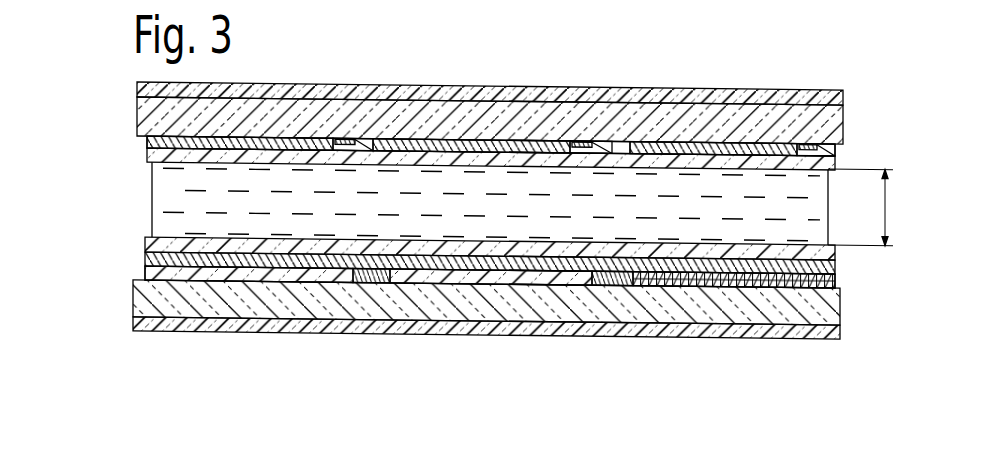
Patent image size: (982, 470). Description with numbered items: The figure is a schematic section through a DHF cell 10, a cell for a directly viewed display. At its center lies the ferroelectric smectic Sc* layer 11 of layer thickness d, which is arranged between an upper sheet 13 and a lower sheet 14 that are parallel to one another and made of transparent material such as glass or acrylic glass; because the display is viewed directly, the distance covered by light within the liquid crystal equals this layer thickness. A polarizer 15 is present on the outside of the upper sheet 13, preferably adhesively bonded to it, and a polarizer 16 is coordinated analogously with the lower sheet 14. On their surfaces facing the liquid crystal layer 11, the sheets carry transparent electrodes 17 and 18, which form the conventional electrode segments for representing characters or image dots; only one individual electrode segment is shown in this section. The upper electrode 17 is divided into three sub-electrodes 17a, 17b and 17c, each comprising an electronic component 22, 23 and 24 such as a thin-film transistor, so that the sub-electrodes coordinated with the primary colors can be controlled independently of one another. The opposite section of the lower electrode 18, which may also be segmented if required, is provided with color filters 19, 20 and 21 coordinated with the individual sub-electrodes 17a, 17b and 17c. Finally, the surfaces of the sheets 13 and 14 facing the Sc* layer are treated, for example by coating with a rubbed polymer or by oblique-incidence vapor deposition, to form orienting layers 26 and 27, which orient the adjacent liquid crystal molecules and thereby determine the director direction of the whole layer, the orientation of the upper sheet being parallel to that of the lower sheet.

The DHF cell 10 is at (421, 349).
The Sc* layer 11 is at (150, 203).
The upper sheet 13 is at (137, 110).
The lower sheet 14 is at (132, 303).
The polarizer 15 is at (137, 93).
The polarizer 16 is at (150, 326).
The transparent electrode 17 is at (440, 106).
The sub-electrode 17a is at (302, 136).
The sub-electrode 17b is at (455, 136).
The sub-electrode 17c is at (690, 136).
The transparent electrode 18 is at (439, 322).
The color filter 19 is at (318, 281).
The color filter 20 is at (494, 281).
The color filter 21 is at (697, 281).
The electronic component 22 is at (372, 136).
The electronic component 23 is at (623, 136).
The electronic component 24 is at (808, 136).
The orienting layer 26 is at (146, 158).
The orienting layer 27 is at (146, 245).